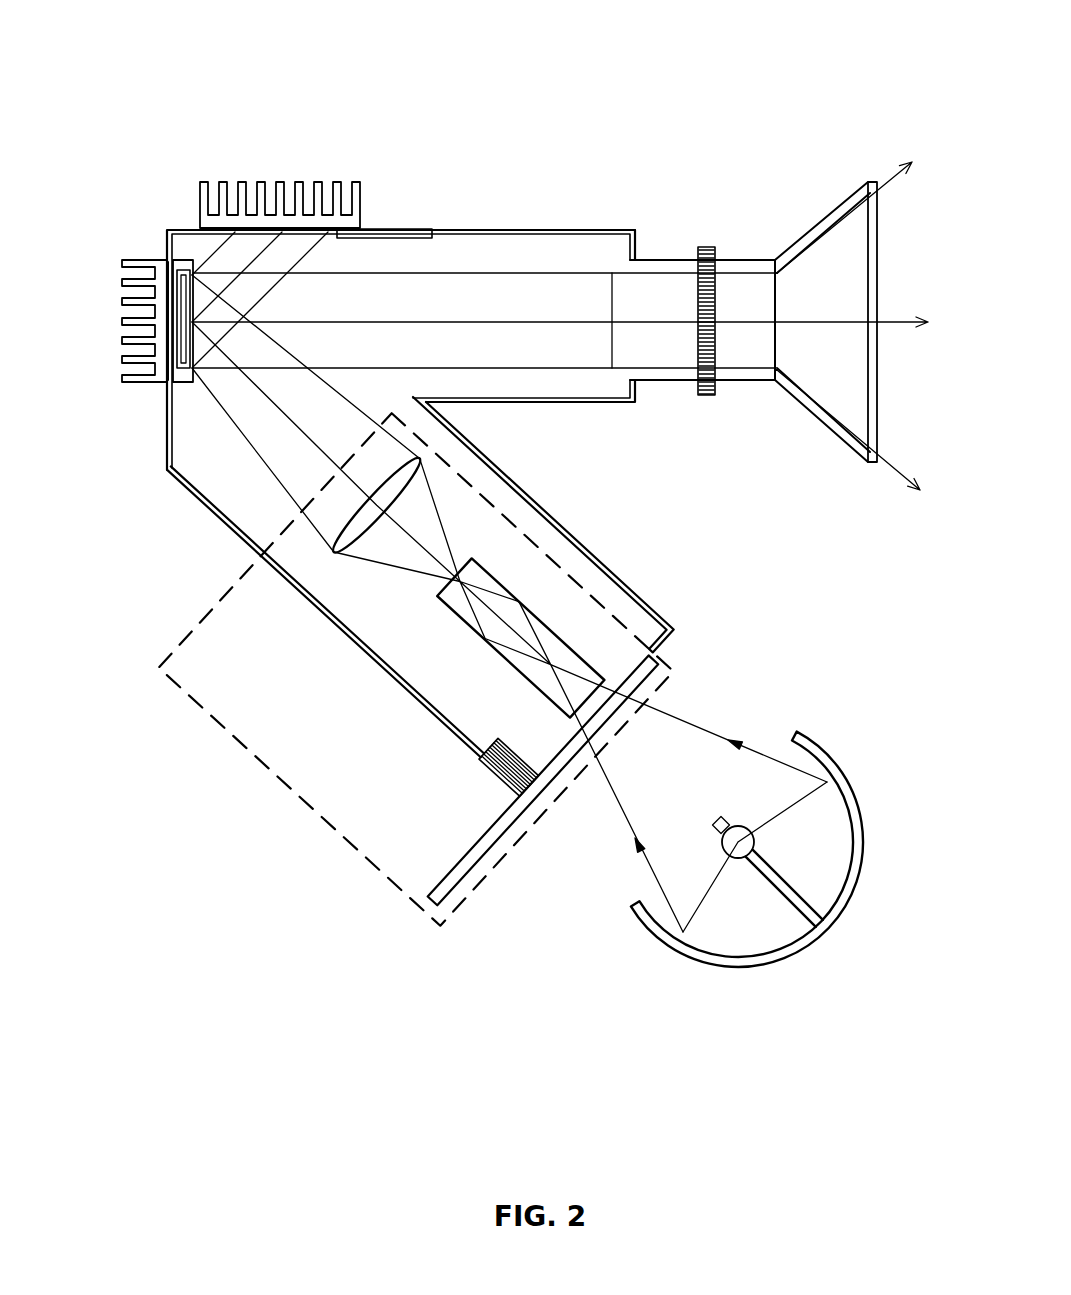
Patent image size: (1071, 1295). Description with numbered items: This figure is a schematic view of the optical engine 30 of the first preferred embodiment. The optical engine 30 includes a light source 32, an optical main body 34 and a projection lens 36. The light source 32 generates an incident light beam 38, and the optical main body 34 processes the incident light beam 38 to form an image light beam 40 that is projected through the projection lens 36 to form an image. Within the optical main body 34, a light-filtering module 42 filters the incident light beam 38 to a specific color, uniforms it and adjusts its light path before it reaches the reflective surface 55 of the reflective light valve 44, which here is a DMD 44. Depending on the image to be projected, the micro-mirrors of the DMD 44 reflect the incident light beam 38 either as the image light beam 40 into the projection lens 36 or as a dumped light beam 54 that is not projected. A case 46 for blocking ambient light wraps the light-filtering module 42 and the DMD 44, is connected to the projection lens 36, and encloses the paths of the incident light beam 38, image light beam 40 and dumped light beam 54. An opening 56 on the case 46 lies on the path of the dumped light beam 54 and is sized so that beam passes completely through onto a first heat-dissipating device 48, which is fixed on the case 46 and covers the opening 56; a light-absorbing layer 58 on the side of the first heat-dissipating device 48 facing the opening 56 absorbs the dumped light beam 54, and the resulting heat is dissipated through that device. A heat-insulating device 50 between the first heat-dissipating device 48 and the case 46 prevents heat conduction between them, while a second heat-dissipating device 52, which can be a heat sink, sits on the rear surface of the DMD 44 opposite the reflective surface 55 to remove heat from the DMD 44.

The optical engine 30 is at (772, 77).
The light source 32 is at (680, 950).
The optical main body 34 is at (639, 514).
The projection lens 36 is at (752, 382).
The incident light beam 38 is at (623, 817).
The image light beam 40 is at (830, 222).
The light-filtering module 42 is at (215, 774).
The reflective light valve 44 is at (170, 377).
The case 46 is at (468, 443).
The first heat-dissipating device 48 is at (348, 230).
The heat-insulating device 50 is at (367, 222).
The second heat-dissipating device 52 is at (157, 267).
The dumped light beam 54 is at (180, 262).
The reflective surface 55 is at (178, 340).
The opening 56 is at (290, 230).
The light-absorbing layer 58 is at (252, 182).